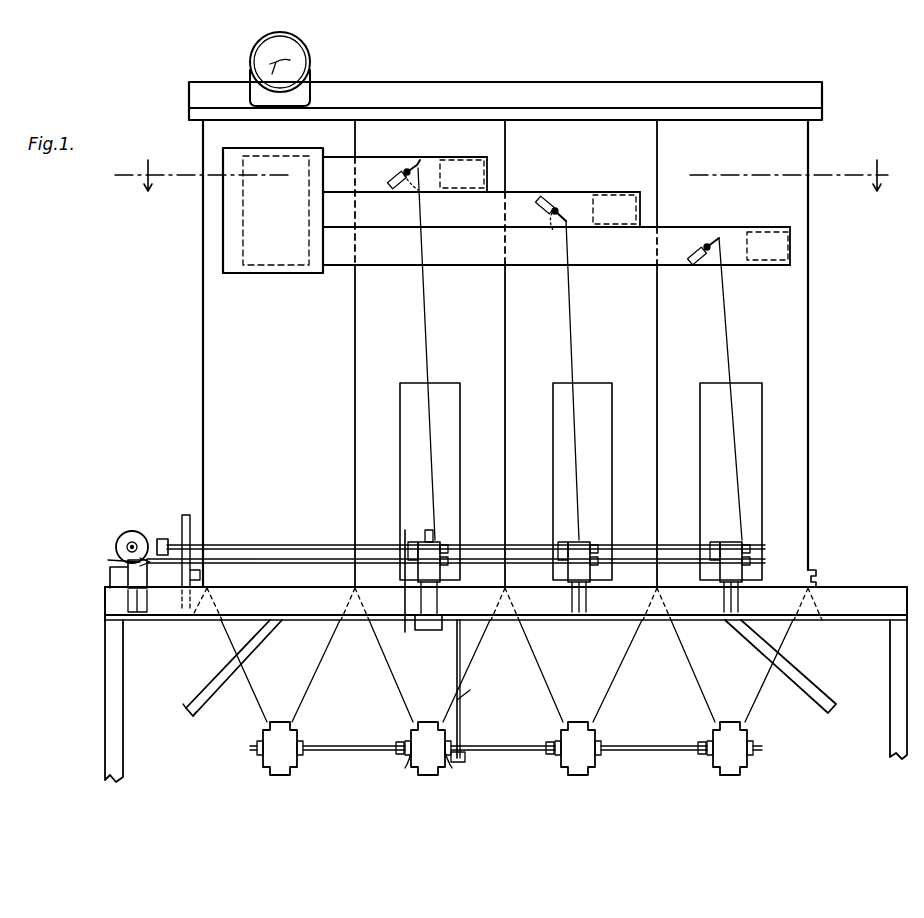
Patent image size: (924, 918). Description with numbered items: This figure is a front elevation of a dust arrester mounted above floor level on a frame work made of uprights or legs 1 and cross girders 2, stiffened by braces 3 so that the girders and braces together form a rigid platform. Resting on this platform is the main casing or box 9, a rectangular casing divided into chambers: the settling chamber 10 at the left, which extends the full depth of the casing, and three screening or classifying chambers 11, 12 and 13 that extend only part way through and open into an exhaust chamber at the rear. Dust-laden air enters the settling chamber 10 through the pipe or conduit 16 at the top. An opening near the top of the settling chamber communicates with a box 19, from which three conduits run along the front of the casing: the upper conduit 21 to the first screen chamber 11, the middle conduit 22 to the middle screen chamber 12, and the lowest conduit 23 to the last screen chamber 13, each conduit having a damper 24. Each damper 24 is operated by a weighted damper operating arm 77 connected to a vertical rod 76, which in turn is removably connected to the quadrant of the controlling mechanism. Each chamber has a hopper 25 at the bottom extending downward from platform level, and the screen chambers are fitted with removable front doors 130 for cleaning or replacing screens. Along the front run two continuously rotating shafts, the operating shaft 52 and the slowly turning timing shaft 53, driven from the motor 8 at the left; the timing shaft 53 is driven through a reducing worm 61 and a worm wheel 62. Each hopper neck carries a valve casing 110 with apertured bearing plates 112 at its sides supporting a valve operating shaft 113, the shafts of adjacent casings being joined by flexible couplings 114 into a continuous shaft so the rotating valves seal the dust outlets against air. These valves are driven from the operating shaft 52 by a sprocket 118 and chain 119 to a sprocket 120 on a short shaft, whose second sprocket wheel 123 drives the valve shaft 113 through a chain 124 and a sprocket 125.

The uprights or legs 1 is at (115, 680).
The cross girders 2 is at (160, 612).
The braces 3 is at (812, 668).
The motor 8 is at (155, 538).
The main casing or box 9 is at (808, 328).
The settling chamber 10 is at (203, 372).
The first screen chamber 11 is at (488, 128).
The middle screen chamber 12 is at (543, 130).
The last screen chamber 13 is at (687, 135).
The pipe or conduit 16 is at (298, 52).
The box 19 is at (250, 272).
The upper conduit 21 is at (372, 170).
The middle conduit 22 is at (528, 192).
The lowest conduit 23 is at (690, 230).
The damper 24 is at (412, 182).
The hopper 25 is at (325, 655).
The operating shaft 52 is at (240, 545).
The timing shaft 53 is at (233, 563).
The reducing worm 61 is at (132, 545).
The worm wheel 62 is at (110, 560).
The rod 76 is at (430, 293).
The weighted damper operating arm 77 is at (420, 160).
The valve casing 110 is at (297, 742).
The apertured bearing plates 112 is at (429, 776).
The operating shaft 113 is at (360, 746).
The flexible couplings 114 is at (398, 754).
The sprocket 118 is at (410, 540).
The chain 119 is at (405, 598).
The sprocket 120 is at (405, 632).
The second sprocket wheel 123 is at (458, 620).
The chain 124 is at (470, 690).
The sprocket 125 is at (462, 762).
The doors 130 is at (460, 460).